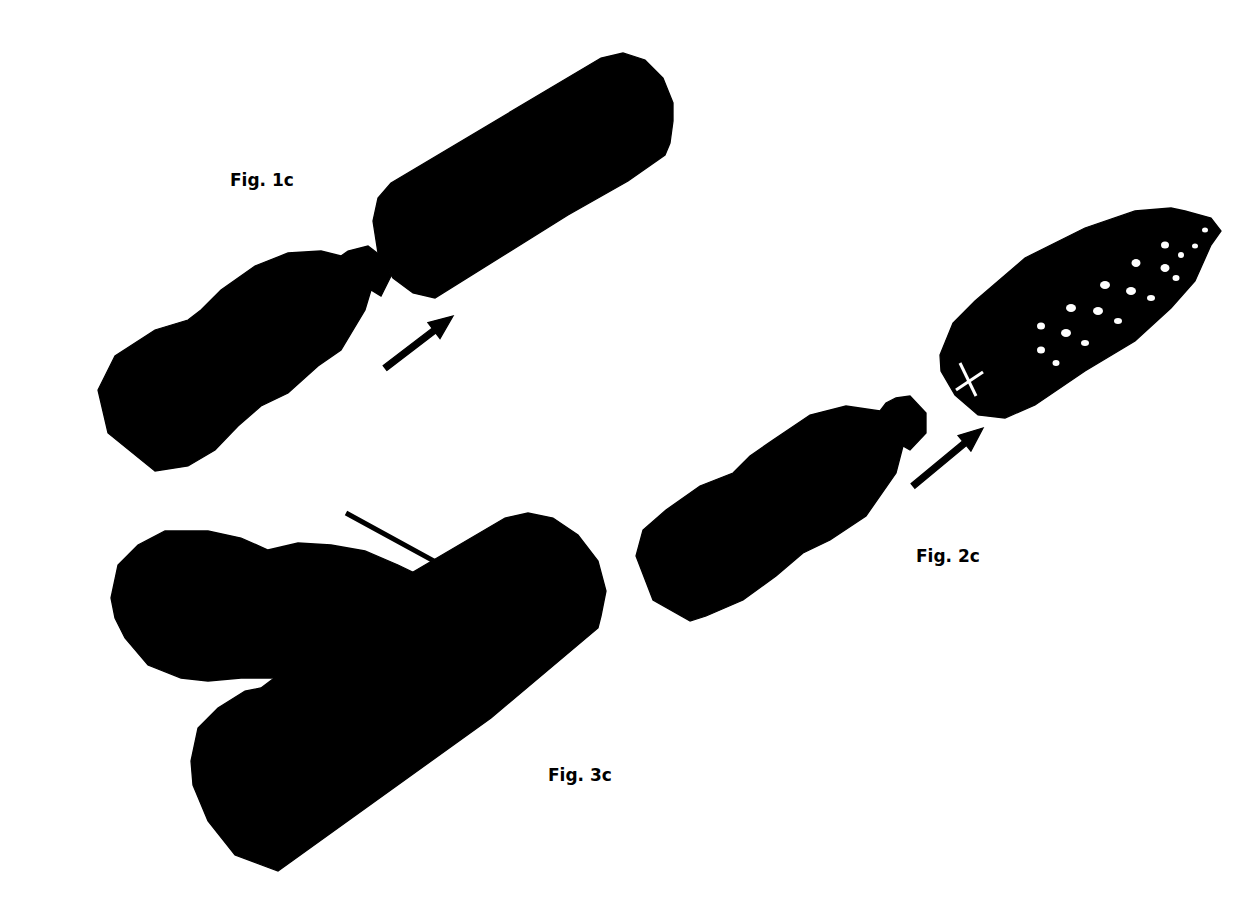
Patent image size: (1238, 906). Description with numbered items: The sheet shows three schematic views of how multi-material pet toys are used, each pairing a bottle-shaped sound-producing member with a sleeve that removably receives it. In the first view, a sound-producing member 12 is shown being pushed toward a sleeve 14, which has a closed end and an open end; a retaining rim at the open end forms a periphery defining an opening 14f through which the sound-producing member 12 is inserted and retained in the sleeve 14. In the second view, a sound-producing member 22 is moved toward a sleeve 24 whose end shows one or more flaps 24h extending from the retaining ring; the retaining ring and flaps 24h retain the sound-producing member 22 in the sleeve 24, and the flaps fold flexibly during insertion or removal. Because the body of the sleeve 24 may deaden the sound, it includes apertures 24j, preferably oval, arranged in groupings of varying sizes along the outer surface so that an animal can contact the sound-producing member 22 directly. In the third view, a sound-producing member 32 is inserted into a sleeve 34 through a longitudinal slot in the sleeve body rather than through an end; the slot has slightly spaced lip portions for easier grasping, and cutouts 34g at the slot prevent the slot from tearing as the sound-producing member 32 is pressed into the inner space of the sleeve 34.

In FIG. 1C, the sound-producing member 12 is at (244, 358).
In FIG. 1C, the sleeve 14 is at (523, 175).
In FIG. 1C, the opening 14f is at (386, 219).
In FIG. 2C, the sound-producing member 22 is at (781, 503).
In FIG. 2C, the sleeve 24 is at (1059, 313).
In FIG. 2C, the flaps 24h is at (918, 355).
In FIG. 2C, the apertures 24j is at (1110, 267).
In FIG. 3C, the sound-producing member 32 is at (282, 584).
In FIG. 3C, the sleeve 34 is at (407, 668).
In FIG. 3C, the cutouts 34g is at (426, 534).